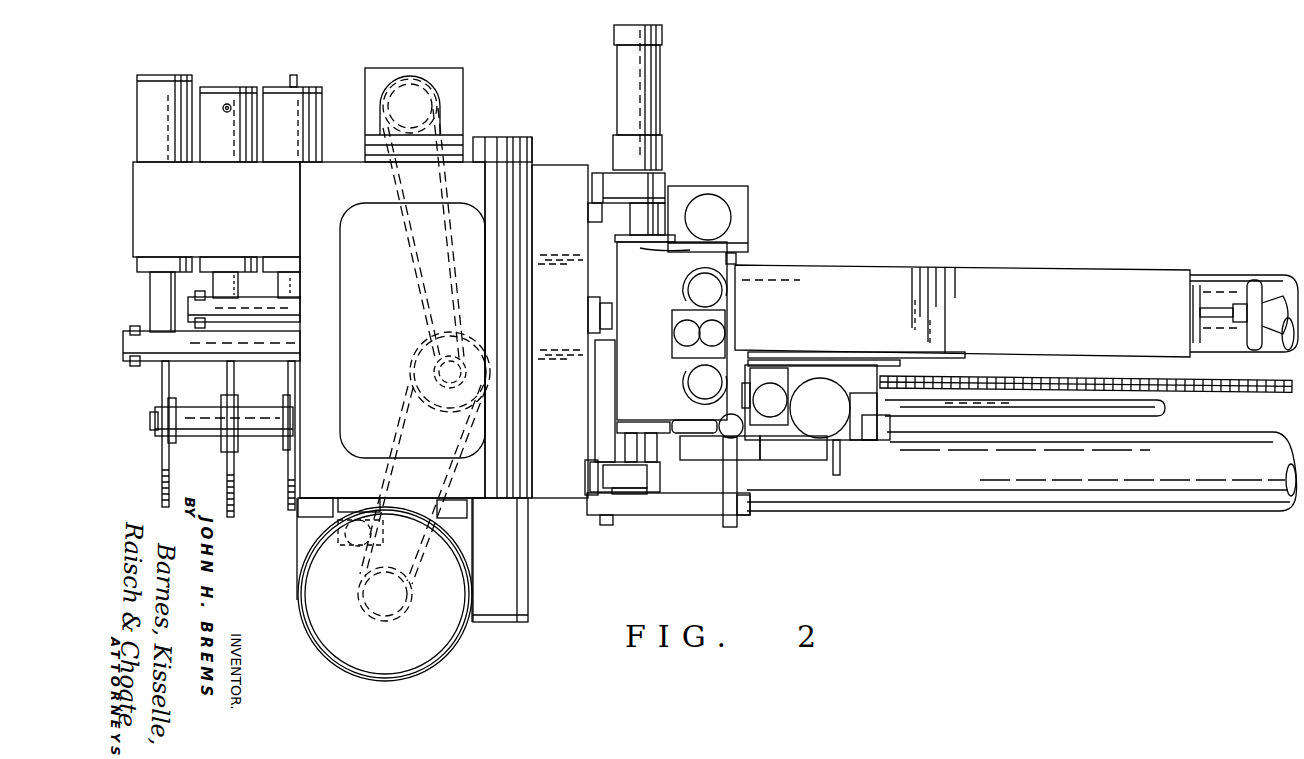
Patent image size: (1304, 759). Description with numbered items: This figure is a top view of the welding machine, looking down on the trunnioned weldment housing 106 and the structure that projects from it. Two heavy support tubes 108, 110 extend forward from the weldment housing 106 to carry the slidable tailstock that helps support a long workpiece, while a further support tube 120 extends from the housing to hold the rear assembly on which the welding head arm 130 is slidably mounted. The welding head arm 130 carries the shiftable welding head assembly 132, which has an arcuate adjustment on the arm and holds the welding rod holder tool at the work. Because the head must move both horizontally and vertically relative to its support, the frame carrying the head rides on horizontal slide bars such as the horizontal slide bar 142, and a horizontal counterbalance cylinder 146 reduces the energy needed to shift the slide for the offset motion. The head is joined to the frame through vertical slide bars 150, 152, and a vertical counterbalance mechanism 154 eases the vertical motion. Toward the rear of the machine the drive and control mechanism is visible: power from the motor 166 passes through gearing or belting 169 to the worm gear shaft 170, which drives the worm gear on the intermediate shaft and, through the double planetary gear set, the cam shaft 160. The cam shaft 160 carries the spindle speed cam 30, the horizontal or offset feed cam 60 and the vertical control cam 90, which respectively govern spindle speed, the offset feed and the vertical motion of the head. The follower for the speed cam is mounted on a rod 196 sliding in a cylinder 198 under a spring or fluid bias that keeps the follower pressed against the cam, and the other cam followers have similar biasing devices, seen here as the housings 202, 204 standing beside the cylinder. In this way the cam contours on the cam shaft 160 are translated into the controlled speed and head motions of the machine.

The spindle speed cam 30 is at (288, 463).
The horizontal or offset feed cam 60 is at (226, 458).
The vertical control cam 90 is at (162, 450).
The weldment housing 106 is at (705, 485).
The support tube 108 is at (1240, 487).
The support tube 110 is at (1228, 287).
The support tube 120 is at (590, 452).
The welding head arm 130 is at (865, 282).
The welding head assembly 132 is at (815, 392).
The horizontal slide bar 142 is at (637, 220).
The horizontal counterbalance cylinder 146 is at (650, 107).
The vertical slide bar 150 is at (700, 383).
The vertical slide bar 152 is at (700, 290).
The vertical counterbalance mechanism 154 is at (722, 222).
The cam shaft 160 is at (195, 415).
The motor 166 is at (427, 643).
The gearing or belting 169 is at (413, 391).
The worm gear shaft 170 is at (437, 366).
The rod 196 is at (288, 283).
The cylinder 198 is at (300, 95).
The housing 202 is at (220, 95).
The housing 204 is at (157, 92).